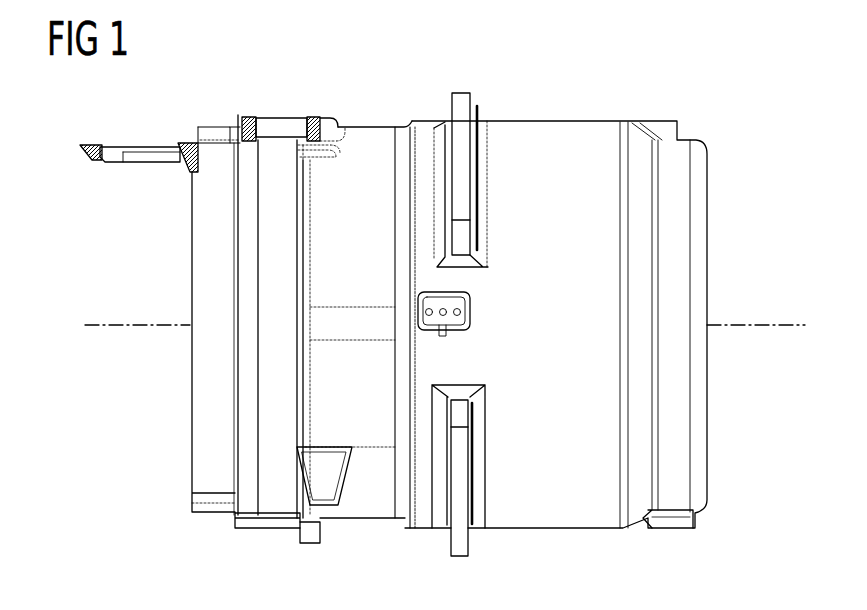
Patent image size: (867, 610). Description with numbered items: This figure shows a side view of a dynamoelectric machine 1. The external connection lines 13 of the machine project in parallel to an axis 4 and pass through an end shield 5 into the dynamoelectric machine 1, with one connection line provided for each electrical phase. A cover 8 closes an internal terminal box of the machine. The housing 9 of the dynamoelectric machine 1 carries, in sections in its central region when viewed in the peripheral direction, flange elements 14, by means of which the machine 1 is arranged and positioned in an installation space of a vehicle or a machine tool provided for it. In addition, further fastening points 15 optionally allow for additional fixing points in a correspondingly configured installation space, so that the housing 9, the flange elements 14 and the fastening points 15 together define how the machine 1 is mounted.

The dynamoelectric machine 1 is at (762, 152).
The axis 4 is at (794, 328).
The end shield 5 is at (207, 440).
The cover 8 is at (281, 128).
The housing 9 is at (370, 132).
The external connection lines 13 is at (95, 166).
The flange elements 14 is at (471, 104).
The fastening points 15 is at (328, 520).